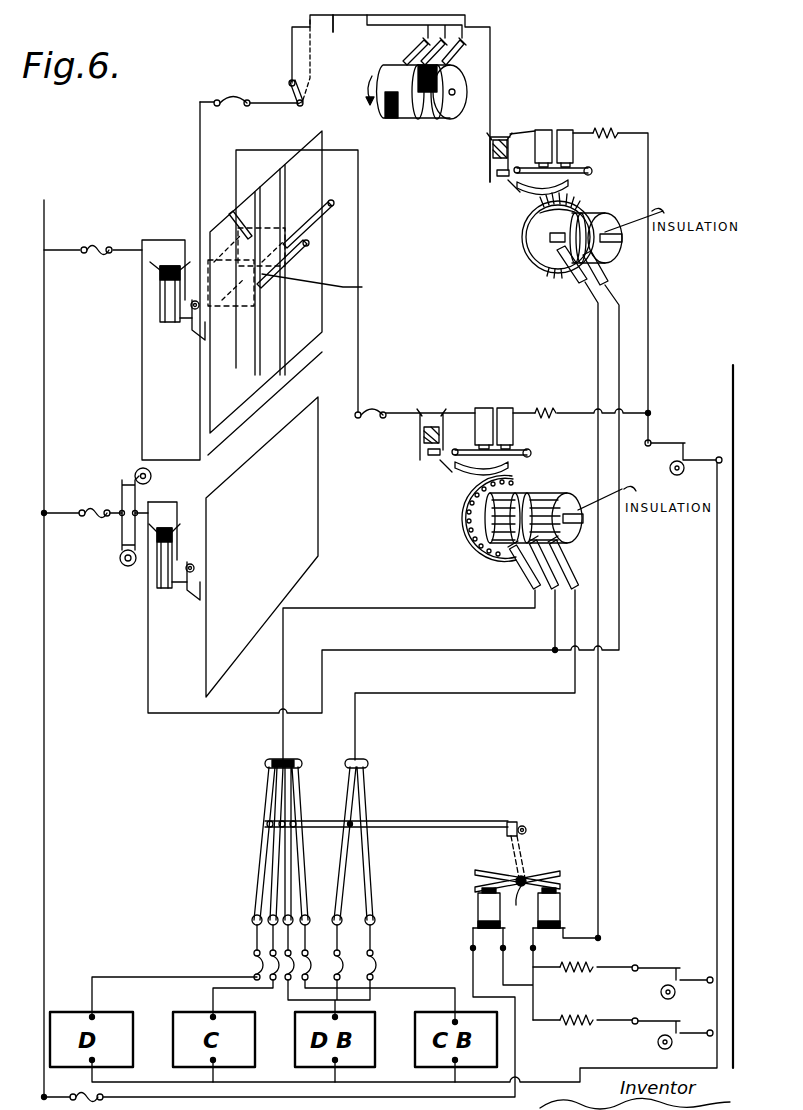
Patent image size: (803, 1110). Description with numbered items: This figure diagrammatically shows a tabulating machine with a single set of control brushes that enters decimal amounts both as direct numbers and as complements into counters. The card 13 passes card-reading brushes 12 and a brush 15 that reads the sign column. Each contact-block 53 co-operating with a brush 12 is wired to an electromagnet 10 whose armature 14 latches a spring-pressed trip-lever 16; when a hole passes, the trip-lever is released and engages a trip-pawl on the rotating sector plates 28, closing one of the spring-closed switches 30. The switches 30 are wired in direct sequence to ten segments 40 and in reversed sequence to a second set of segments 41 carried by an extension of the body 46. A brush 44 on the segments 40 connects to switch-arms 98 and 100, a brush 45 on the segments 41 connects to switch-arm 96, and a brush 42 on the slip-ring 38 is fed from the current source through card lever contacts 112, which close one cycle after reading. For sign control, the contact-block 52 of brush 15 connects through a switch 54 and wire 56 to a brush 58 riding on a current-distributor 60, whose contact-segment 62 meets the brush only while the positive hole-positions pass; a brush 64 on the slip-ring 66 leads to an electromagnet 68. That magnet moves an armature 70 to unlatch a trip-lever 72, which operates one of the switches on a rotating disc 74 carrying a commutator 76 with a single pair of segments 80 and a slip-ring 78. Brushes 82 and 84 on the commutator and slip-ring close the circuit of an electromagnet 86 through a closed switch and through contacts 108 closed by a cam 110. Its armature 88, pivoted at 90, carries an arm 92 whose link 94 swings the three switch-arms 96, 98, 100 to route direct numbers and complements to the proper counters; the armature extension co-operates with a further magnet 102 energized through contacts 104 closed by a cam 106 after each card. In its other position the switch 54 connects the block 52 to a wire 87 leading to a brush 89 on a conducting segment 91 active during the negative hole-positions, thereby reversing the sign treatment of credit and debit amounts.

The electromagnet 10 is at (513, 430).
The card-reading brush 12 is at (293, 238).
The card 13 is at (273, 307).
The armature 14 is at (530, 464).
The brush 15 is at (324, 286).
The trip-lever 16 is at (455, 473).
The sector-shaped metal plate 28 is at (468, 530).
The spring-closed switch 30 is at (540, 213).
The slip-ring 38 is at (465, 503).
The segments 40 is at (527, 499).
The segments 41 is at (560, 504).
The brush 42 is at (527, 567).
The brush 44 is at (513, 556).
The brush 45 is at (560, 561).
The body 46 is at (572, 535).
The contact-block 52 is at (228, 293).
The contact-block 53 is at (252, 240).
The switch 54 is at (288, 93).
The wire 56 is at (290, 60).
The brush 58 is at (413, 50).
The current-distributor 60 is at (460, 108).
The contact-segment 62 is at (390, 73).
The brush 64 is at (452, 53).
The slip-ring 66 is at (405, 110).
The electromagnet 68 is at (578, 132).
The armature 70 is at (587, 168).
The trip-lever 72 is at (532, 192).
The rotating disc 74 is at (545, 270).
The commutator 76 is at (548, 229).
The slip-ring 78 is at (590, 214).
The segment 80 is at (552, 242).
The brush 82 is at (577, 287).
The brush 84 is at (603, 276).
The electromagnet 86 is at (550, 910).
The wire 87 is at (344, 33).
The armature 88 is at (527, 873).
The brush 89 is at (440, 56).
The pivot 90 is at (518, 902).
The conducting segment 91 is at (430, 112).
The arm 92 is at (527, 831).
The link 94 is at (403, 818).
The switch-arm 96 is at (348, 801).
The switch-arm 98 is at (294, 778).
The switch-arm 100 is at (267, 800).
The magnet 102 is at (482, 908).
The contacts 104 is at (667, 1024).
The cam 106 is at (659, 1043).
The contacts 108 is at (667, 974).
The cam 110 is at (662, 996).
The card lever contacts 112 is at (167, 590).